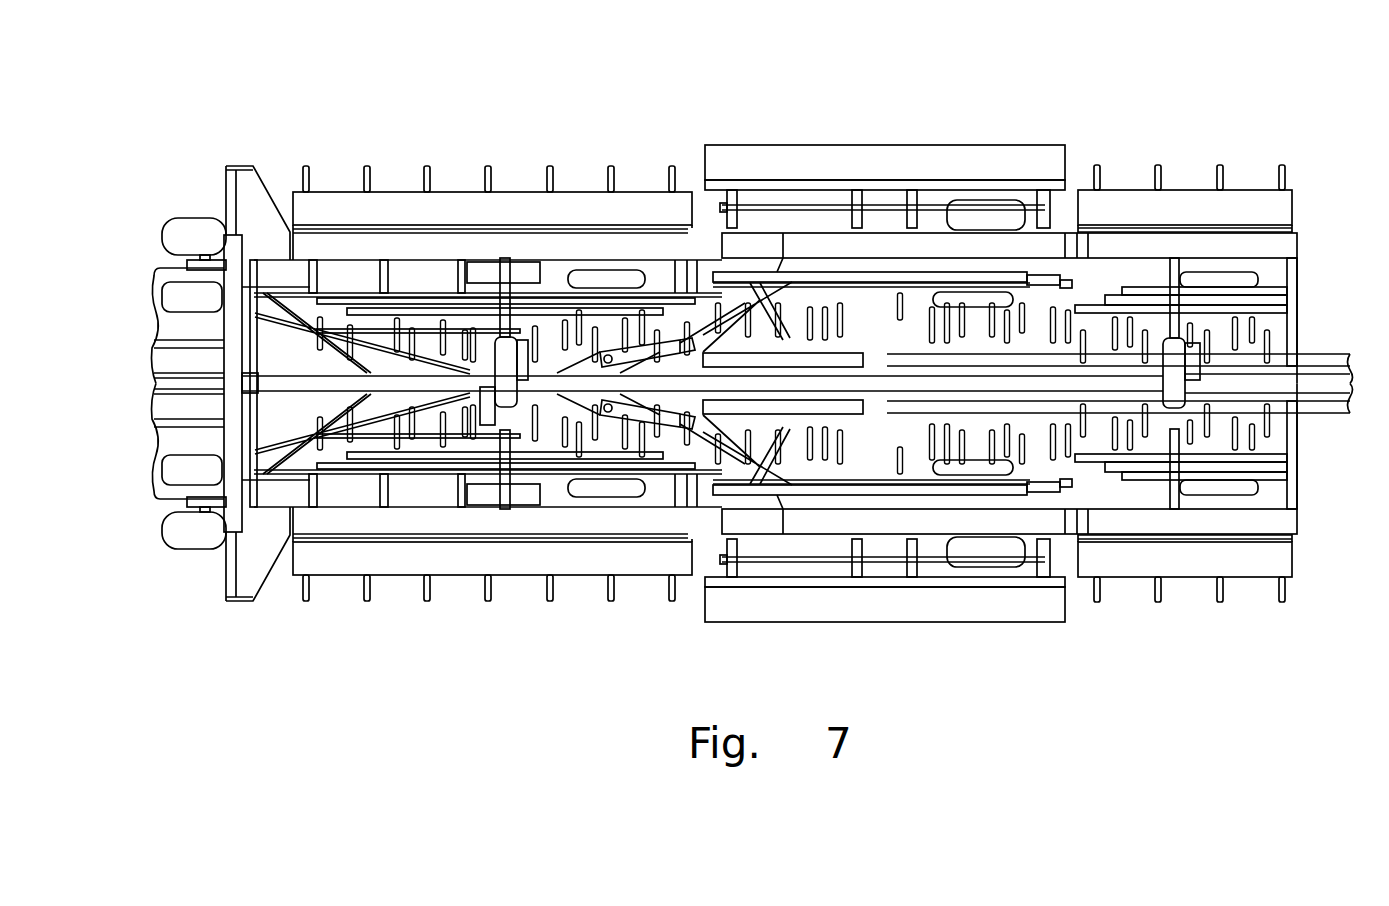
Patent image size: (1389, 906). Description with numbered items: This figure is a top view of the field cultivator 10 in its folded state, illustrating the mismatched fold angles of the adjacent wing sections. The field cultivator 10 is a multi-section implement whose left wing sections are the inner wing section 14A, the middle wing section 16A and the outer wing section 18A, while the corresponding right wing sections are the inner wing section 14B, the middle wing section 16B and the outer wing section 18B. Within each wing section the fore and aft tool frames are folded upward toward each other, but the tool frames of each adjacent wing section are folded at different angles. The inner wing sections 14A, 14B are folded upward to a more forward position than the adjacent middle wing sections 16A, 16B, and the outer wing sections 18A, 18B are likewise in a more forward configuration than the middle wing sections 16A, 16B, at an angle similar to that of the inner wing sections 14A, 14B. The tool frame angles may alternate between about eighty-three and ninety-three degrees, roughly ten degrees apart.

The field cultivator 10 is at (763, 376).
The inner wing section (left) 14A is at (518, 172).
The inner wing section (right) 14B is at (520, 597).
The middle wing section (left) 16A is at (880, 130).
The middle wing section (right) 16B is at (893, 637).
The outer wing section (left) 18A is at (1226, 169).
The outer wing section (right) 18B is at (1226, 605).